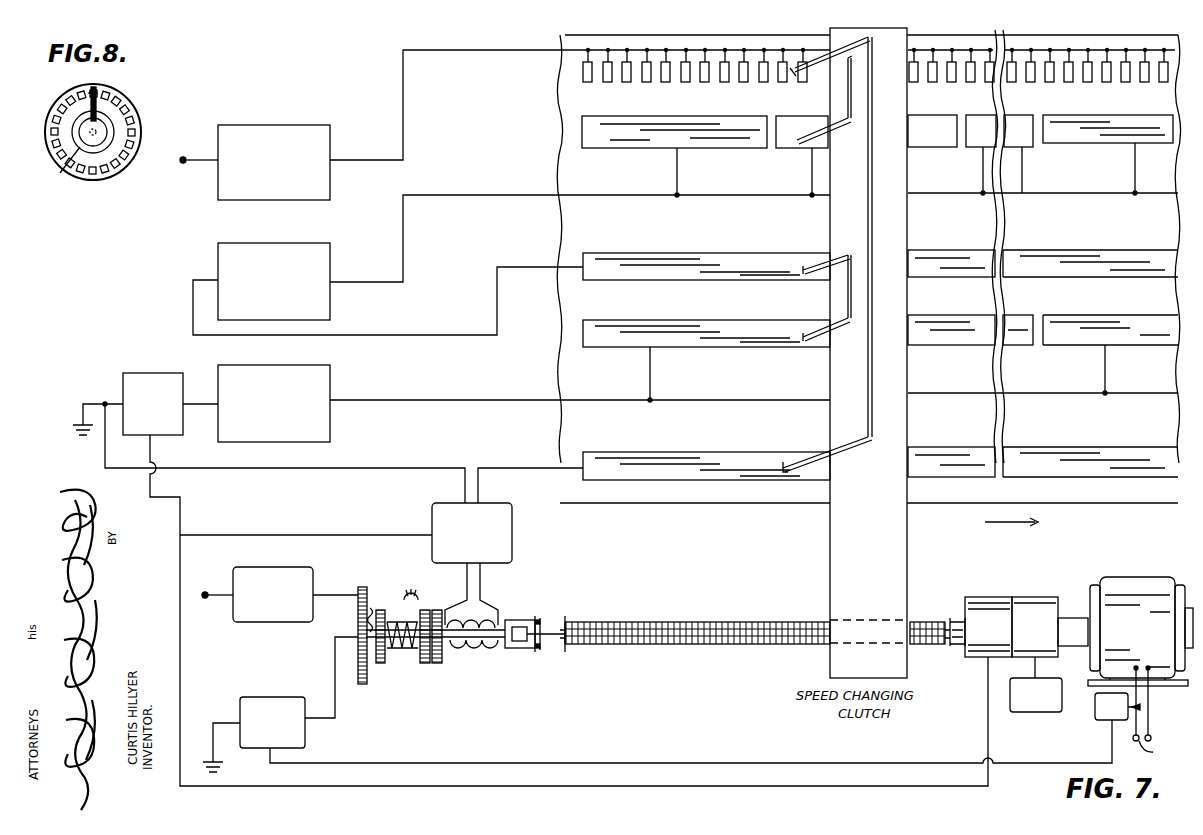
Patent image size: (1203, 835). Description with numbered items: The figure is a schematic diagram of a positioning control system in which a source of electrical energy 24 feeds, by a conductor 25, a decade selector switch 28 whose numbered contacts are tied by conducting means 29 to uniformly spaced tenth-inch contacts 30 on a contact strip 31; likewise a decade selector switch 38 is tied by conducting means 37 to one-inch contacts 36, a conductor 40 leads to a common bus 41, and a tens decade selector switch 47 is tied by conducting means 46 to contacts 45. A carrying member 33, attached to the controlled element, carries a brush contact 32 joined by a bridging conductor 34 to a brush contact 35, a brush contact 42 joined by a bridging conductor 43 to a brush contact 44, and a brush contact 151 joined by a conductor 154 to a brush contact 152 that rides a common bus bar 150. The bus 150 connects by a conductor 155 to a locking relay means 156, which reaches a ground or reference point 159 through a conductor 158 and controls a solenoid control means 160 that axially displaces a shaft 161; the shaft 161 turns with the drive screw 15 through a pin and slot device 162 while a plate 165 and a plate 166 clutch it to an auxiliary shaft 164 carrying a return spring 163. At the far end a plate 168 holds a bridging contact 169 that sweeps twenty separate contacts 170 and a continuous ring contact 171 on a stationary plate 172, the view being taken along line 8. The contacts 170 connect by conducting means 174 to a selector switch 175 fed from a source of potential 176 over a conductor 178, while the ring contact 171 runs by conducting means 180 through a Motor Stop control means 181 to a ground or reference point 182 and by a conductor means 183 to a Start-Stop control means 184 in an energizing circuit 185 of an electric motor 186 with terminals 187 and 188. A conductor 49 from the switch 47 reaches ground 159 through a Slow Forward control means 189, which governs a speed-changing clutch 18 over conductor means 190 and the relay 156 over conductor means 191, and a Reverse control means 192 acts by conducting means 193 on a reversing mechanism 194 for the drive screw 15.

In FIG. 7, the section line 8— 8 is at (380, 570).
In FIG. 7, the drive screw 15 is at (660, 622).
In FIG. 7, the speed-changing clutch 18 is at (1017, 610).
In FIG. 7, the source of electrical energy 24 is at (180, 163).
In FIG. 7, the conductor 25 is at (200, 164).
In FIG. 7, the decade selector switch 28 is at (255, 122).
In FIG. 7, the conducting means 29 is at (478, 50).
In FIG. 7, the contacts 30 is at (635, 92).
In FIG. 7, the contact strip 31 is at (716, 311).
In FIG. 7, the brush contact 32 is at (813, 75).
In FIG. 7, the carrying member 33 is at (907, 538).
In FIG. 7, the bridging conductor 34 is at (850, 122).
In FIG. 7, the brush contact 35 is at (790, 148).
In FIG. 7, the contacts 36 is at (610, 148).
In FIG. 7, the conducting means 37 is at (487, 195).
In FIG. 7, the decade selector switch 38 is at (255, 240).
In FIG. 7, the conductor 40 is at (415, 333).
In FIG. 7, the common bus 41 is at (700, 253).
In FIG. 7, the brush contact 42 is at (808, 266).
In FIG. 7, the bridging conductor 43 is at (853, 315).
In FIG. 7, the brush contact 44 is at (818, 317).
In FIG. 7, the contacts 45 is at (720, 352).
In FIG. 7, the conducting means 46 is at (520, 400).
In FIG. 7, the tens decade selector switch 47 is at (333, 380).
In FIG. 7, the conductor 49 is at (165, 435).
In FIG. 7, the common bus bar 150 is at (690, 452).
In FIG. 7, the brush contact 151 is at (785, 74).
In FIG. 7, the brush contact 152 is at (787, 462).
In FIG. 7, the conductor 154 is at (875, 425).
In FIG. 7, the conductor 155 is at (520, 474).
In FIG. 7, the locking relay means 156 is at (512, 540).
In FIG. 7, the conductor 158 is at (393, 474).
In FIG. 7, the ground or reference point 159 is at (76, 420).
In FIG. 7, the solenoid control means 160 is at (470, 648).
In FIG. 7, the shaft 161 is at (520, 648).
In FIG. 7, the pin and slot device 162 is at (555, 612).
In FIG. 7, the return spring 163 is at (418, 596).
In FIG. 7, the auxiliary shaft 164 is at (385, 663).
In FIG. 7, the plate 165 is at (428, 663).
In FIG. 7, the plate 166 is at (434, 663).
In FIG. 7, the plate 168 is at (376, 598).
In FIG. 8, the bridging contact 169 is at (98, 100).
In FIG. 7, the bridging contact 169 is at (356, 600).
In FIG. 8, the separate contacts 170 is at (110, 170).
In FIG. 8, the ring contact 171 is at (60, 173).
In FIG. 8, the stationary plate 172 is at (146, 105).
In FIG. 7, the stationary plate 172 is at (362, 684).
In FIG. 7, the conducting means 174 is at (332, 592).
In FIG. 7, the selector switch 175 is at (258, 622).
In FIG. 7, the source of potential 176 is at (210, 590).
In FIG. 7, the conductor 178 is at (218, 606).
In FIG. 7, the conducting means 180 is at (335, 668).
In FIG. 7, the Motor Stop control means 181 is at (305, 735).
In FIG. 7, the ground or reference point 182 is at (222, 760).
In FIG. 7, the conductor means 183 is at (580, 763).
In FIG. 7, the Start-Stop control means 184 is at (1095, 715).
In FIG. 7, the energizing circuit 185 is at (1140, 707).
In FIG. 7, the electric motor 186 is at (1140, 577).
In FIG. 7, the terminal 187 is at (1164, 752).
In FIG. 7, the terminal 188 is at (1151, 738).
In FIG. 7, the Slow Forward control means 189 is at (140, 373).
In FIG. 7, the conductor means 190 is at (180, 507).
In FIG. 7, the conductor means 191 is at (330, 535).
In FIG. 7, the Reverse control means 192 is at (1032, 712).
In FIG. 7, the conducting means 193 is at (1040, 668).
In FIG. 7, the reversing mechanism 194 is at (1030, 597).